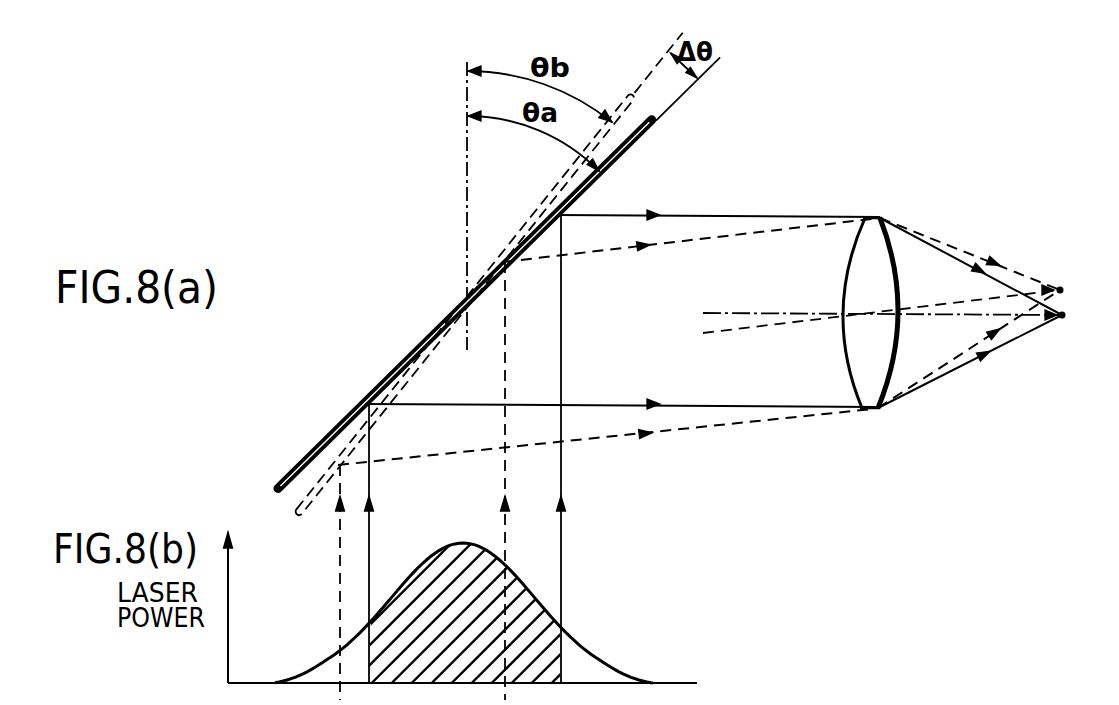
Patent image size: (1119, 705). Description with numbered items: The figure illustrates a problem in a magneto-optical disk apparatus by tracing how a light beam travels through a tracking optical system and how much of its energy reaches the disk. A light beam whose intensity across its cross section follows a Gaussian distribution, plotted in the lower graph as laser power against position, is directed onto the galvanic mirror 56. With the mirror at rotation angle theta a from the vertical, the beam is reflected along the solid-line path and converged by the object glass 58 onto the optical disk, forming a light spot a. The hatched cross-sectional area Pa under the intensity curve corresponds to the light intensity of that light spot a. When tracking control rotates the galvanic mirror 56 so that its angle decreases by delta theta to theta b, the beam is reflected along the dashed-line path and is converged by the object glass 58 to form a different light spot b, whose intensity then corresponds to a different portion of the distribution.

The galvanic mirror 56 is at (378, 388).
The object glass 58 is at (874, 370).
The light spot a is at (1072, 313).
The light spot b is at (1072, 287).
The cross-sectional area Pa is at (420, 592).